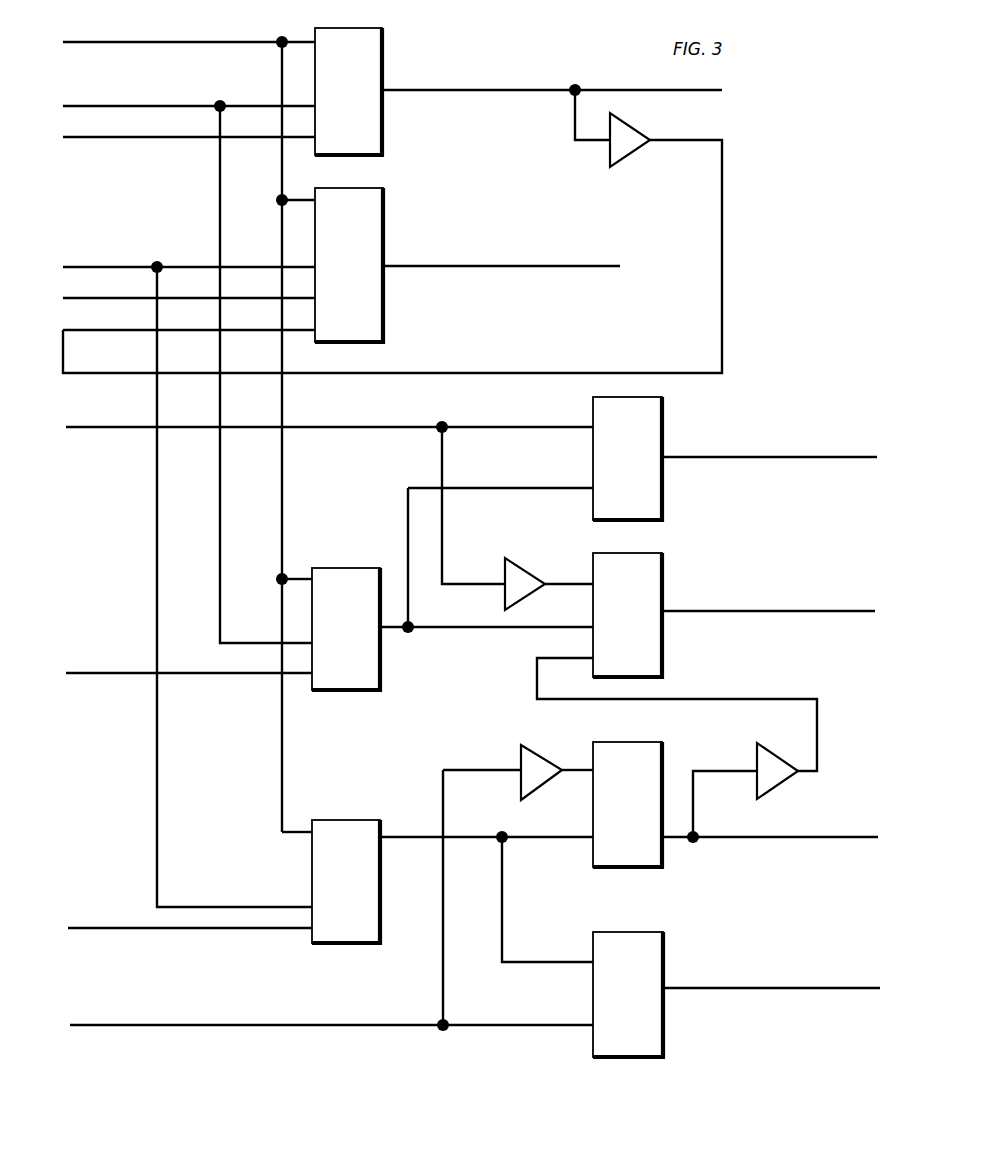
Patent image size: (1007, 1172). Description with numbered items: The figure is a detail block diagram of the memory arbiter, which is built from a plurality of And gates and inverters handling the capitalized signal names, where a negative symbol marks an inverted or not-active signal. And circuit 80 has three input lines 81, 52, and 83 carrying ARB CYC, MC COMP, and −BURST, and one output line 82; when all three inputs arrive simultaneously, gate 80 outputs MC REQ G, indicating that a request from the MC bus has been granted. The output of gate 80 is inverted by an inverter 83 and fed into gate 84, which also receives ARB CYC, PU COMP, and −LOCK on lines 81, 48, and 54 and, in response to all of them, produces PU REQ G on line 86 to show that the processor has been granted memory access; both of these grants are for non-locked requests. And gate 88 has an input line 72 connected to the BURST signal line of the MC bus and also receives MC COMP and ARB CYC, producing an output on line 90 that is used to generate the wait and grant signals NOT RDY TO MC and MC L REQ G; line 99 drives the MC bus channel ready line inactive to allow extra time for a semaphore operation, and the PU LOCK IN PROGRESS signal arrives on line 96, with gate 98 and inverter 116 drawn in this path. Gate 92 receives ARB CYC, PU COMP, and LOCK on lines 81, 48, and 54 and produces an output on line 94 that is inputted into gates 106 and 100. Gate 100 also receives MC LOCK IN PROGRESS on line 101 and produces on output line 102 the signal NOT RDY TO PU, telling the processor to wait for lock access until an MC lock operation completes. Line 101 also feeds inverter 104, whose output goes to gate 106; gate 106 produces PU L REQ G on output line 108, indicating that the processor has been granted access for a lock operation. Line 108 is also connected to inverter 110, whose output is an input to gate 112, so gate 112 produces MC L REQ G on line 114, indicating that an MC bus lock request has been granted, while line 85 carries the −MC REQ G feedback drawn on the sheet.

The input line 81 is at (75, 42).
The input line 52 is at (80, 106).
The input line / inverter 83 is at (85, 137).
The And circuit 80 is at (382, 80).
The output line 82 is at (480, 92).
The gate 84 is at (383, 235).
The output line 86 is at (468, 268).
The input line 48 is at (65, 267).
The input line 54 is at (72, 298).
The -MC REQ G signal line 85 is at (63, 366).
The line 96 is at (131, 430).
The AND gate 98 is at (593, 475).
The line 99 is at (756, 460).
The And gate 88 is at (361, 568).
The output line 90 is at (479, 630).
The inverter 116 is at (503, 578).
The gate 112 is at (662, 600).
The line 114 is at (761, 614).
The input line 72 is at (141, 676).
The gate 92 is at (362, 820).
The output line 94 is at (426, 836).
The inverter 104 is at (521, 760).
The gate 106 is at (620, 742).
The inverter 110 is at (757, 757).
The output line 108 is at (826, 840).
The gate 100 is at (650, 932).
The output line 102 is at (773, 991).
The line 101 is at (416, 1024).